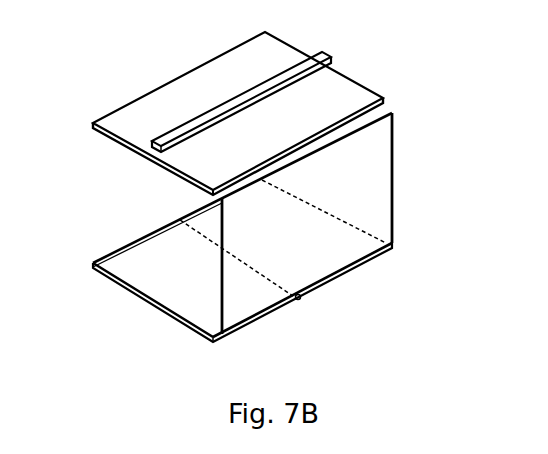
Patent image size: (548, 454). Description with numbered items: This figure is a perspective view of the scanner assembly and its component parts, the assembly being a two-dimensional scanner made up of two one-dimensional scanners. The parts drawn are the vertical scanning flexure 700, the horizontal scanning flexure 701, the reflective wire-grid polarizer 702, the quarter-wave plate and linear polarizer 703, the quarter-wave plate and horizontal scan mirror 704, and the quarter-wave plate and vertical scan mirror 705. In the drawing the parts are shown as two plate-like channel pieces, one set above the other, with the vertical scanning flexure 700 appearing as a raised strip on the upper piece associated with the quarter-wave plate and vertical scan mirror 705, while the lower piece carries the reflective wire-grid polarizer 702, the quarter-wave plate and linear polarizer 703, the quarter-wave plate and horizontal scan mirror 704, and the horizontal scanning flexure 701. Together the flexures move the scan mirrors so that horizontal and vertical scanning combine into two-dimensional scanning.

The vertical scanning flexure 700 is at (323, 60).
The horizontal scanning flexure 701 is at (300, 299).
The reflective wire-grid polarizer 702 is at (145, 234).
The quarter-wave plate and linear polarizer 703 is at (395, 167).
The quarter-wave plate and horizontal scan mirror 704 is at (146, 302).
The quarter-wave plate and vertical scan mirror 705 is at (160, 87).